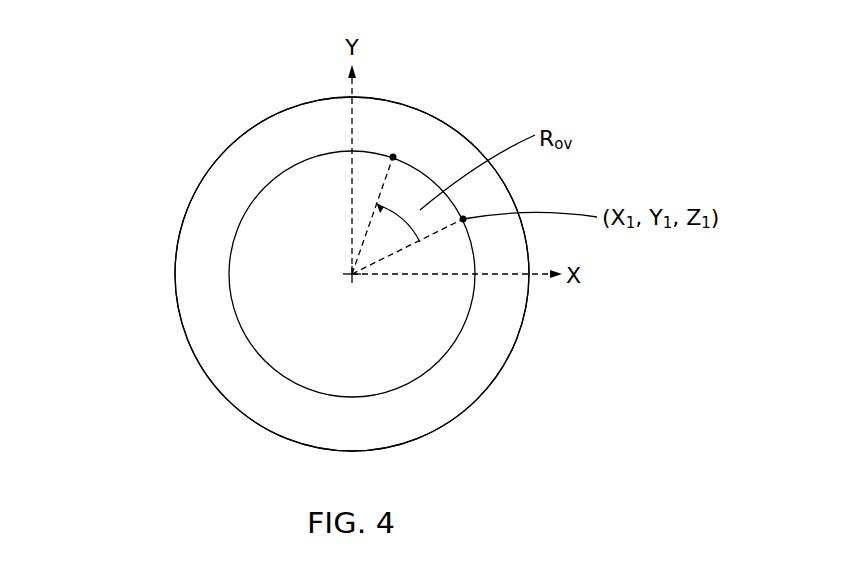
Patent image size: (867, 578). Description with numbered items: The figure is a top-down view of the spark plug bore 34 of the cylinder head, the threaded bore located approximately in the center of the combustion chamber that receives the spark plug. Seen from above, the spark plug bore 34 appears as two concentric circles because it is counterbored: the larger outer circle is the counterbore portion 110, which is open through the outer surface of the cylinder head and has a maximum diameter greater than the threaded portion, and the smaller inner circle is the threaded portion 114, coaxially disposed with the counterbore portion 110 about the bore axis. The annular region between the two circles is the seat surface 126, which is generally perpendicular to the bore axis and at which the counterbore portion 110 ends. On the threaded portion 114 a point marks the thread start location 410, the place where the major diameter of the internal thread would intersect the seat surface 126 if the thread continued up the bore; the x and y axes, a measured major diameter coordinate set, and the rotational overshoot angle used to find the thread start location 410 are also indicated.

The counterbore portion 110 is at (210, 167).
The spark plug bore 34 is at (185, 212).
The threaded portion 114 is at (283, 168).
The seat surface 126 is at (204, 268).
The thread start location 410 is at (393, 157).